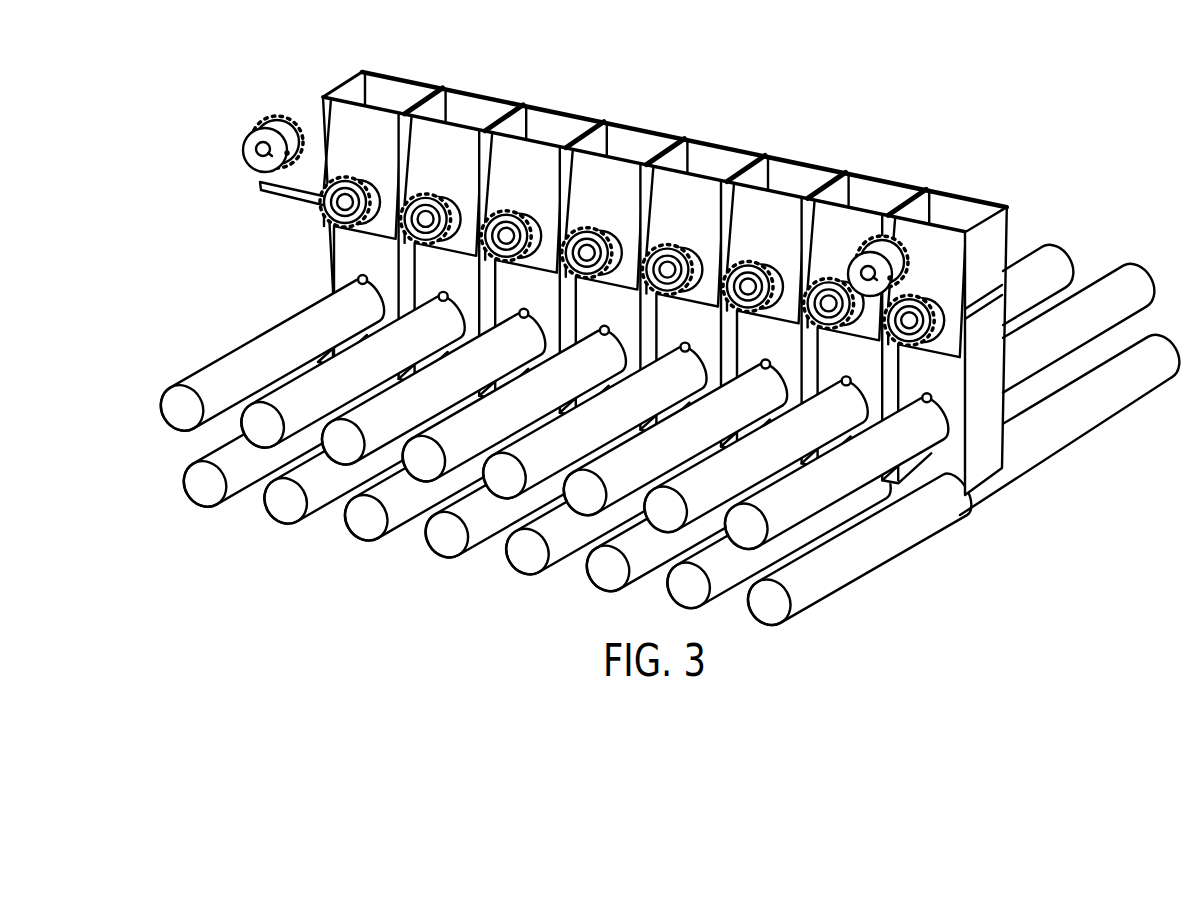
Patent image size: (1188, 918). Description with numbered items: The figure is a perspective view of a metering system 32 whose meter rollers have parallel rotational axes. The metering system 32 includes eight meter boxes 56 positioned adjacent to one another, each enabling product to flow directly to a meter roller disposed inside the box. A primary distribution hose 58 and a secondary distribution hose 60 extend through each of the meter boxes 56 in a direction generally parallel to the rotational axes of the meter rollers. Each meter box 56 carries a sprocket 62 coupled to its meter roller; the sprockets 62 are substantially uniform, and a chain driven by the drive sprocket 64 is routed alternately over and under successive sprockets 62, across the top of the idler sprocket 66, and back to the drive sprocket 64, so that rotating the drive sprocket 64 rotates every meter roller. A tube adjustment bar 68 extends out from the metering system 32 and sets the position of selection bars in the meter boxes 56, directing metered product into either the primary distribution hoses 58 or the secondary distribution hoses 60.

The metering system 32 is at (665, 336).
The meter box 56 is at (545, 118).
The primary distribution hose 58 is at (287, 395).
The secondary distribution hose 60 is at (288, 512).
The sprocket 62 is at (827, 279).
The drive sprocket 64 is at (247, 134).
The idler sprocket 66 is at (889, 254).
The tube adjustment bar 68 is at (281, 191).